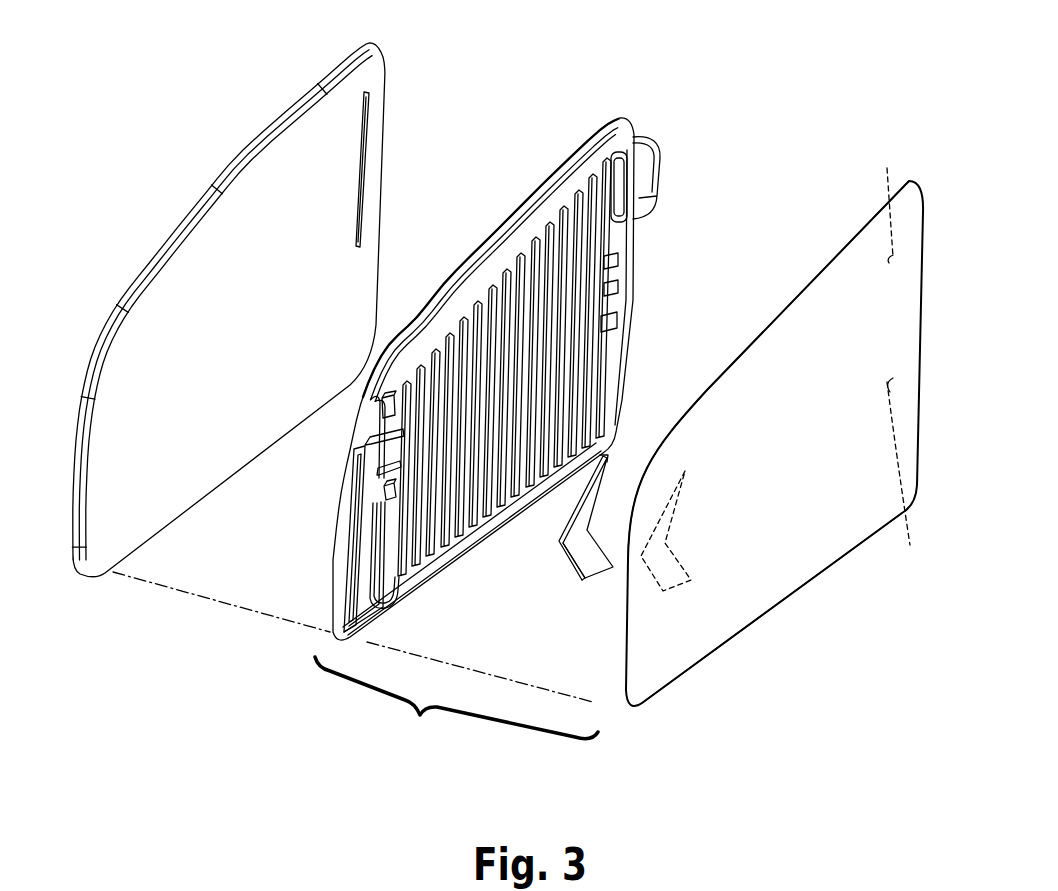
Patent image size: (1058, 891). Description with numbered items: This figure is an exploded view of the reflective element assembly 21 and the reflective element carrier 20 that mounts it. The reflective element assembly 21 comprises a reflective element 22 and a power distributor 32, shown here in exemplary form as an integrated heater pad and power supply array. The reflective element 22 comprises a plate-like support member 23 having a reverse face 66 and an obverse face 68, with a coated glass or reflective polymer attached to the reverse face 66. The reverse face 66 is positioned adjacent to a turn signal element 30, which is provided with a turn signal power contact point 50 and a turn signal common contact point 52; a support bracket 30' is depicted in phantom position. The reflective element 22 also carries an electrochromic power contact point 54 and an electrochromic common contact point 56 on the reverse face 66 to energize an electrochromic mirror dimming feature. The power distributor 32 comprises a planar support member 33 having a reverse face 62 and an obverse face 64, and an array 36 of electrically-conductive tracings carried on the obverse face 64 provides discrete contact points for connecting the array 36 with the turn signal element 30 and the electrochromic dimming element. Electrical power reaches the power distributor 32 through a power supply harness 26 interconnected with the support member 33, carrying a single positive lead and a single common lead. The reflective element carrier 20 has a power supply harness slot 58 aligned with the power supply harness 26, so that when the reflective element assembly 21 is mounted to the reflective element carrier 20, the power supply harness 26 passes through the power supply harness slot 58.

The reflective element carrier 20 is at (277, 127).
The reflective element assembly 21 is at (456, 703).
The reflective element 22 is at (927, 207).
The plate-like support member 23 is at (842, 523).
The power supply harness 26 is at (647, 180).
The turn signal element 30 is at (586, 550).
The support bracket (phantom position) 30' is at (713, 590).
The power distributor 32 is at (557, 177).
The planar support member 33 is at (365, 428).
The array of electrically-conductive tracings 36 is at (487, 313).
The turn signal power contact point 50 is at (583, 575).
The turn signal common contact point 52 is at (583, 480).
The electrochromic power contact point 54 is at (909, 479).
The electrochromic common contact point 56 is at (892, 202).
The power supply harness slot 58 is at (365, 118).
The reverse face 62 is at (498, 232).
The obverse face 64 is at (577, 363).
The reverse face 66 is at (757, 333).
The obverse face 68 is at (823, 323).